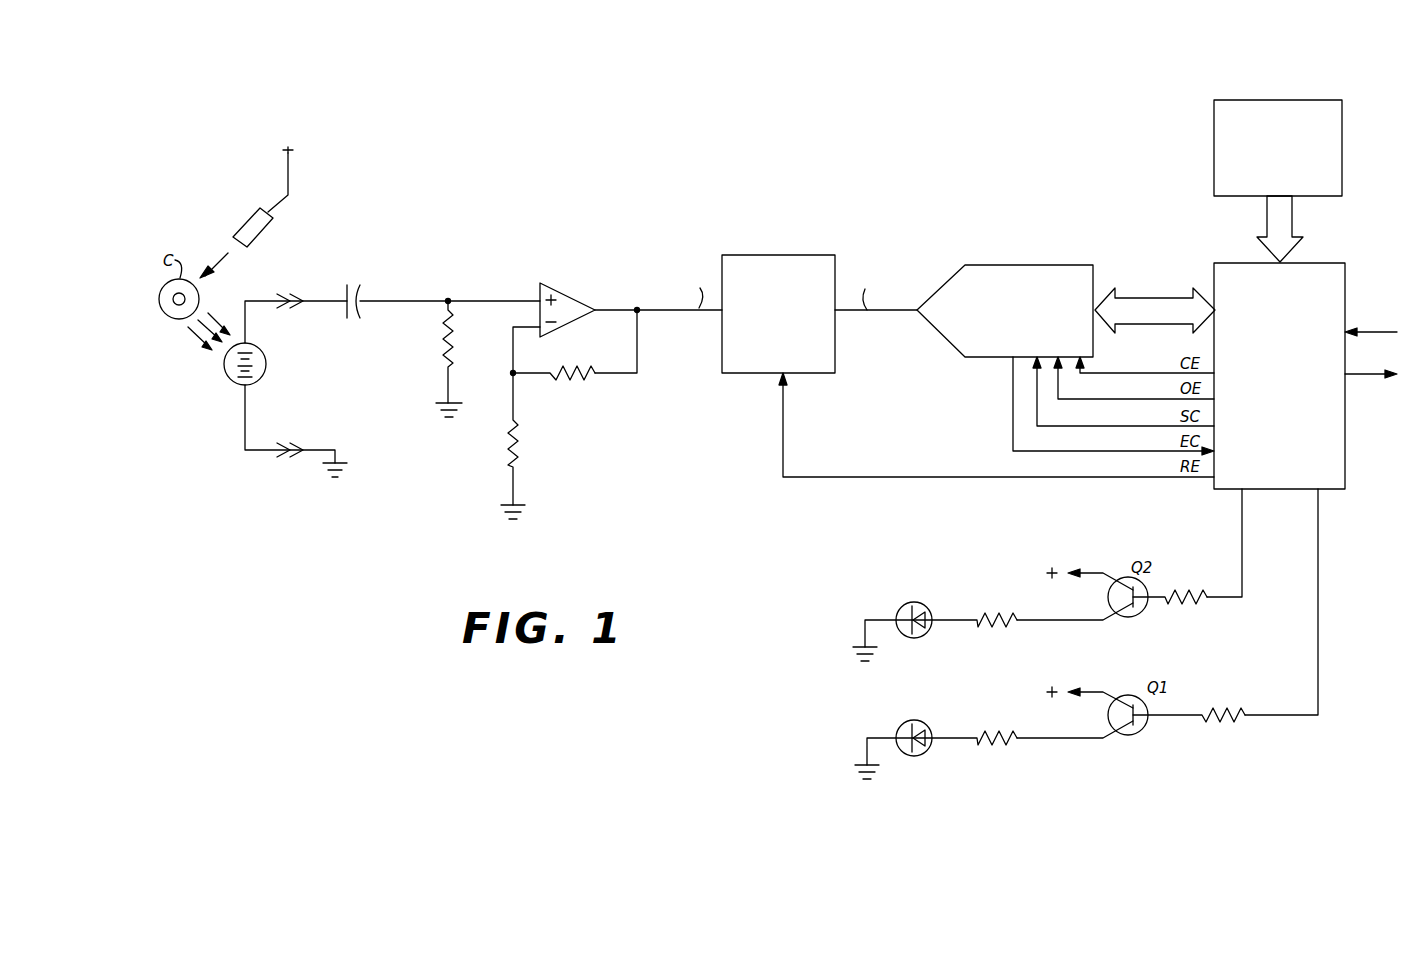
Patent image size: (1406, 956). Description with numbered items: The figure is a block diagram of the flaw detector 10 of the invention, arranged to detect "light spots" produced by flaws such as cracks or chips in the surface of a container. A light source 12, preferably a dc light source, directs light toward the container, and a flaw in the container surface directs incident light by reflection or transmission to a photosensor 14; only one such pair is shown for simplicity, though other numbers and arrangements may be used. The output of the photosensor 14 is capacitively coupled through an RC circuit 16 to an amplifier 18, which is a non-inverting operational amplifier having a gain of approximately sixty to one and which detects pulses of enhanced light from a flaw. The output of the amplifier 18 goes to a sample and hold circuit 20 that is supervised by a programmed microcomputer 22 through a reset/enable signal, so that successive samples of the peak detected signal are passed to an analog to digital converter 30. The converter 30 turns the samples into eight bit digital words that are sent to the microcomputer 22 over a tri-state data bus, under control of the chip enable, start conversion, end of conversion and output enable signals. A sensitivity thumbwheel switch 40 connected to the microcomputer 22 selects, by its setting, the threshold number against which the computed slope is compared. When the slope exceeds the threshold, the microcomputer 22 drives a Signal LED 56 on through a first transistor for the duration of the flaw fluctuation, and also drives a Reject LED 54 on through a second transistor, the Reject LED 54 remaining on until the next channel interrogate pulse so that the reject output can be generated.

The flaw detector 10 is at (892, 188).
The light source 12 is at (247, 215).
The photosensor 14 is at (263, 373).
The RC circuit 16 is at (437, 268).
The amplifier 18 is at (603, 270).
The sample and hold circuit 20 is at (773, 255).
The microcomputer 22 is at (1294, 453).
The analog to digital converter 30 is at (1030, 265).
The sensitivity thumbwheel switch 40 is at (1278, 99).
The Reject LED 54 is at (927, 634).
The Signal LED 56 is at (927, 752).